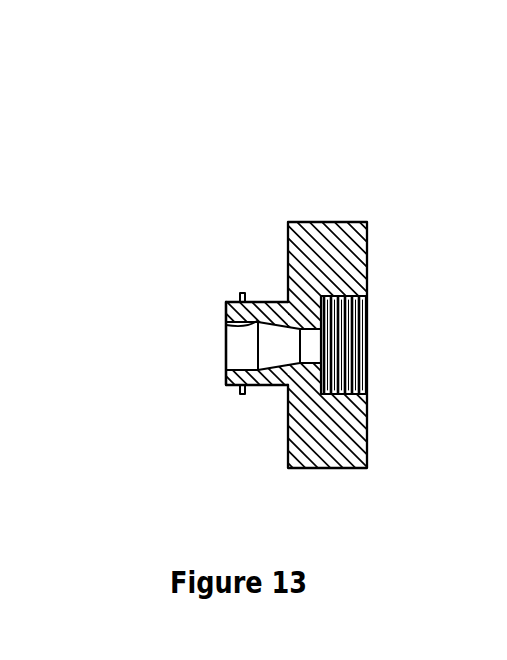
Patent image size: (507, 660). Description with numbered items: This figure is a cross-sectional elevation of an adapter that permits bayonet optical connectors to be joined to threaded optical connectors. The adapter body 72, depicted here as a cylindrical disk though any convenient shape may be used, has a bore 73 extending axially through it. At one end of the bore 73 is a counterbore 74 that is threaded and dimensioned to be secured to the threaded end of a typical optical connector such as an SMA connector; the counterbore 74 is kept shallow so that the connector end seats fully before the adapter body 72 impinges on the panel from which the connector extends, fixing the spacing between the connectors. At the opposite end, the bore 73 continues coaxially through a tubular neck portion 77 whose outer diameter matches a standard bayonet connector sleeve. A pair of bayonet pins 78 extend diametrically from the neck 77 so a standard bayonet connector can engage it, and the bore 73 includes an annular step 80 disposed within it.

The adapter body 72 is at (313, 222).
The bore 73 is at (225, 347).
The counterbore 74 is at (353, 328).
The tubular neck portion 77 is at (224, 313).
The bayonet pins 78 is at (242, 293).
The annular step 80 is at (226, 325).